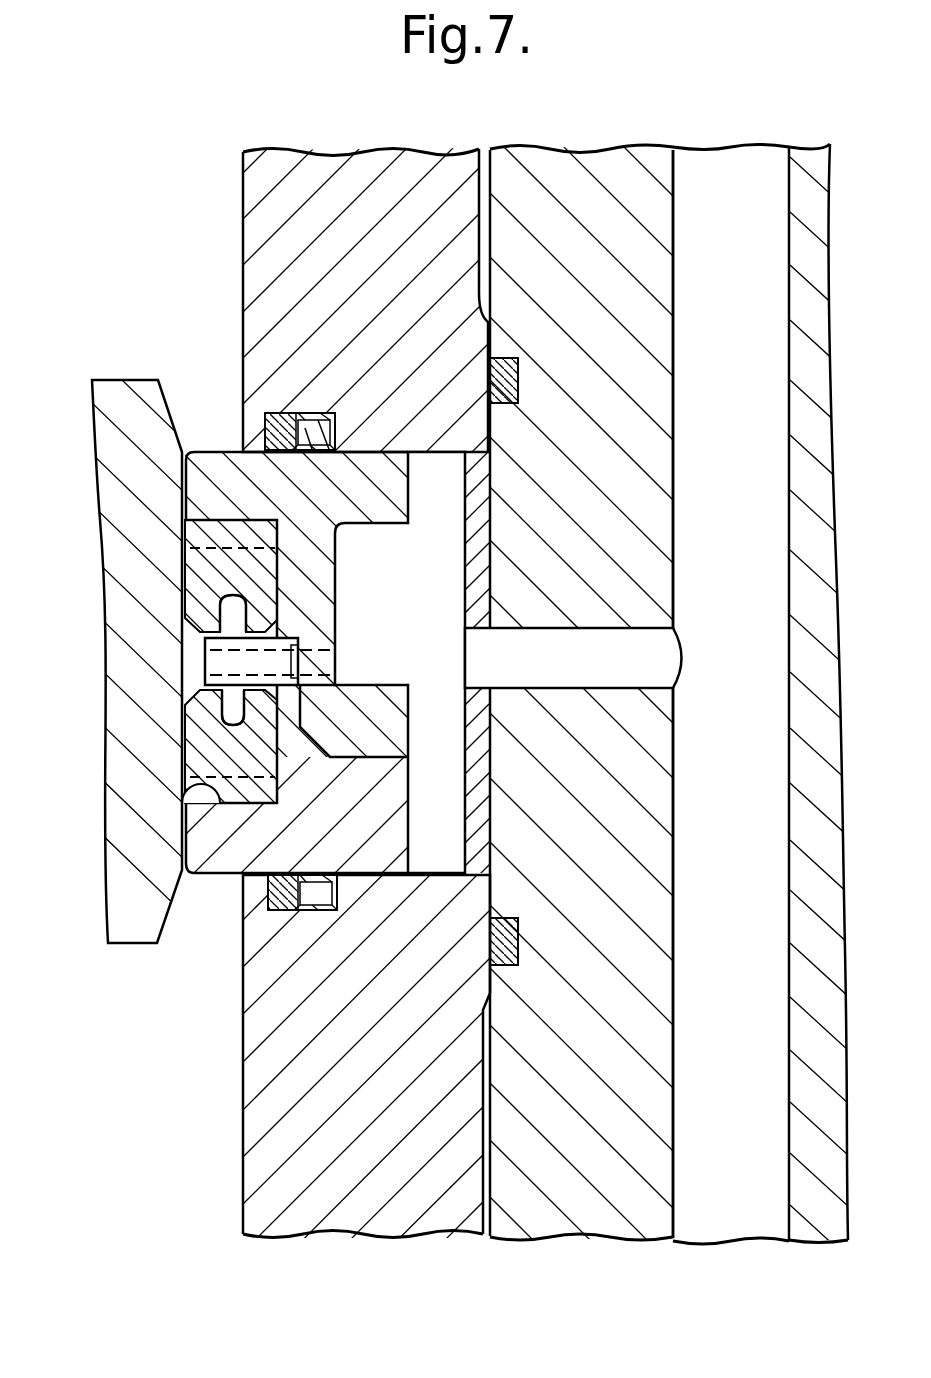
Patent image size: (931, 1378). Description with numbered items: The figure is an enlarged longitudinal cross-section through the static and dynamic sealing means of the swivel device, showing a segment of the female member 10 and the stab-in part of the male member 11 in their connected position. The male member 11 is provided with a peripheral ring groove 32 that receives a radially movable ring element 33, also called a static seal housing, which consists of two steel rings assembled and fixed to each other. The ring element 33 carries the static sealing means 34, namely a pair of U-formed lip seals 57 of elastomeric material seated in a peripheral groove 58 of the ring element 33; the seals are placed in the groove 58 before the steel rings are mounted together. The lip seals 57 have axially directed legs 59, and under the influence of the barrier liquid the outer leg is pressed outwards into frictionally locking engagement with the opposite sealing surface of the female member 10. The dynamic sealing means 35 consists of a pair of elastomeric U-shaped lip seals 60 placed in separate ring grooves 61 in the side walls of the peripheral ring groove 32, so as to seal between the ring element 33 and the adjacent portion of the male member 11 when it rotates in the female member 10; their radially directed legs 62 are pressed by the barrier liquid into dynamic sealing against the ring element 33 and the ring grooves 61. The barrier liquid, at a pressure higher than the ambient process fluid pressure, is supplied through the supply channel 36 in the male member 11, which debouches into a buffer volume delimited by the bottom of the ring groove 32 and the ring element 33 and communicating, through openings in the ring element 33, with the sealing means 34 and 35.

The female member 10 is at (133, 931).
The male member 11 is at (272, 1105).
The peripheral ring groove 32 is at (417, 642).
The ring element 33 is at (218, 470).
The static sealing means 34 is at (184, 649).
The dynamic sealing means 35 is at (268, 417).
The supply channel 36 is at (747, 1052).
The U-formed lip seals 57 is at (195, 562).
The peripheral groove 58 is at (195, 797).
The axially directed legs 59 is at (240, 712).
The U-shaped lip seals 60 is at (275, 413).
The ring grooves 61 is at (257, 930).
The radially directed legs 62 is at (330, 452).